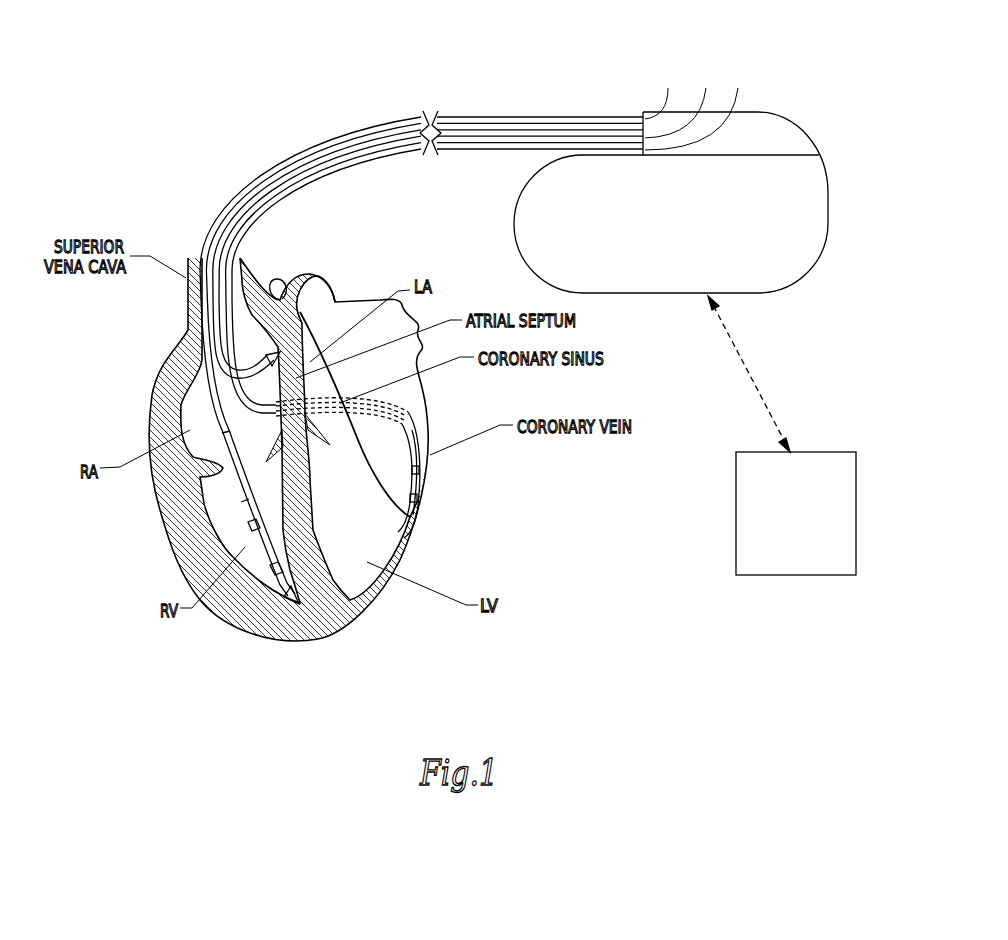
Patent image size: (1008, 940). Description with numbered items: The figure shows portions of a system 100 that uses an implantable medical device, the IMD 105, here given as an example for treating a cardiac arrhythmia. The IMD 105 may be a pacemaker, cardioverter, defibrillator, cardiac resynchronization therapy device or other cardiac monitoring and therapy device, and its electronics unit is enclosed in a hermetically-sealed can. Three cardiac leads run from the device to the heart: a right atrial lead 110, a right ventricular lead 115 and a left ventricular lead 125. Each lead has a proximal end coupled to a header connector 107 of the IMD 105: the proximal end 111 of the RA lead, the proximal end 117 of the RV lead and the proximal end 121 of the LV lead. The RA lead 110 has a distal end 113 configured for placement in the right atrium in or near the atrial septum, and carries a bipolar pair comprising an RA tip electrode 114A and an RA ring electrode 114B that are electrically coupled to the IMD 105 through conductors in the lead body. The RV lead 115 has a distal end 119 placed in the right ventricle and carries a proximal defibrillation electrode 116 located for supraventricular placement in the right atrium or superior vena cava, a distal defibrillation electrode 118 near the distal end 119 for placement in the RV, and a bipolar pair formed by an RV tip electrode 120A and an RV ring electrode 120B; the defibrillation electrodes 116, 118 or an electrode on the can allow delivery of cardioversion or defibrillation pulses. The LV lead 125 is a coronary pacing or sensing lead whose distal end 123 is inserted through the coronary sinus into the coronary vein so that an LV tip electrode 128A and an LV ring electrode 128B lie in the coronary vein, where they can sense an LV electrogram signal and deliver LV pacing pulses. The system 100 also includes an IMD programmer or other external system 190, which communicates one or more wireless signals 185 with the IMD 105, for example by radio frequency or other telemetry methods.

The system 100 is at (122, 38).
The IMD 105 is at (783, 290).
The header connector 107 is at (793, 123).
The right atrial lead 110 is at (452, 152).
The proximal end 111 is at (697, 108).
The distal end 113 is at (282, 340).
The RA tip electrode 114A is at (305, 330).
The RA ring electrode 114B is at (284, 280).
The right ventricular lead 115 is at (343, 133).
The proximal defibrillation electrode 116 is at (212, 385).
The proximal end 117 is at (658, 92).
The distal defibrillation electrode 118 is at (243, 523).
The distal end 119 is at (290, 610).
The RV tip electrode 120A is at (333, 633).
The RV ring electrode 120B is at (280, 588).
The proximal end 121 is at (680, 102).
The distal end 123 is at (417, 523).
The left ventricular lead 125 is at (295, 164).
The LV tip electrode 128A is at (418, 498).
The LV ring electrode 128B is at (420, 472).
The wireless signals 185 is at (750, 371).
The external system 190 is at (796, 576).